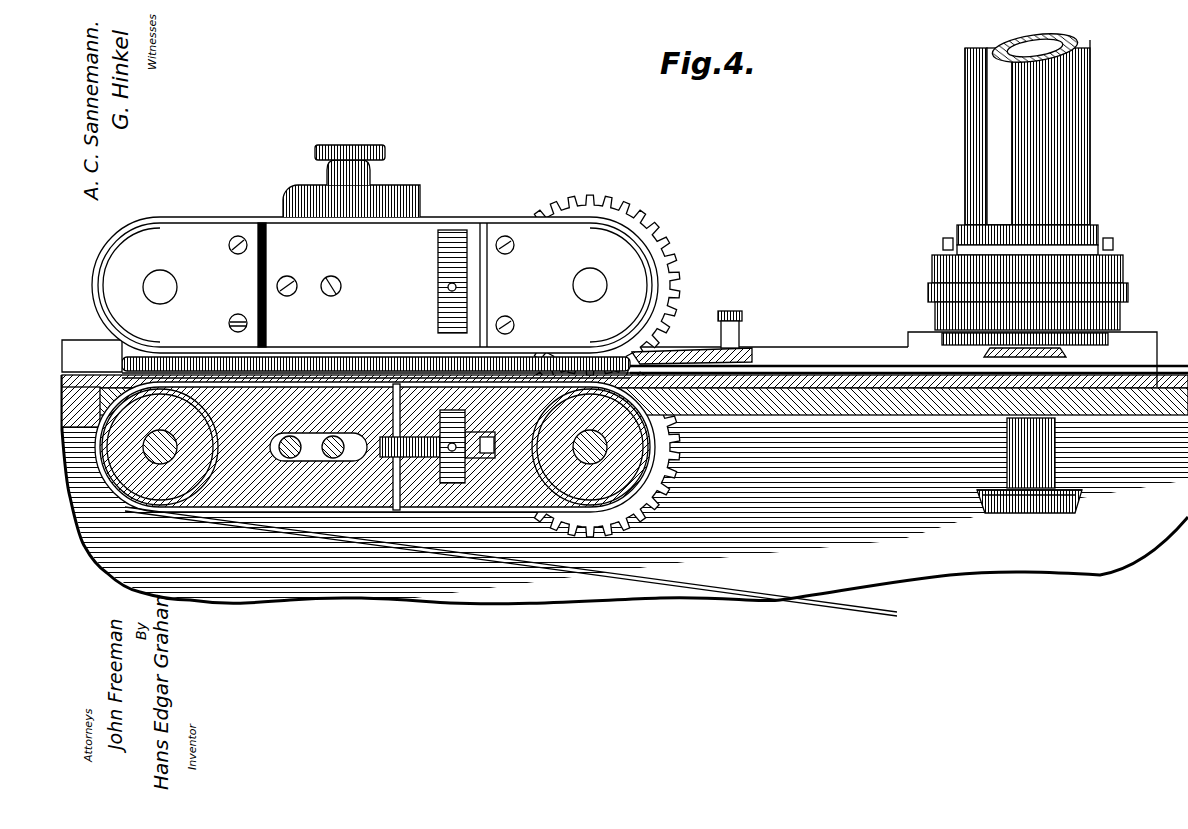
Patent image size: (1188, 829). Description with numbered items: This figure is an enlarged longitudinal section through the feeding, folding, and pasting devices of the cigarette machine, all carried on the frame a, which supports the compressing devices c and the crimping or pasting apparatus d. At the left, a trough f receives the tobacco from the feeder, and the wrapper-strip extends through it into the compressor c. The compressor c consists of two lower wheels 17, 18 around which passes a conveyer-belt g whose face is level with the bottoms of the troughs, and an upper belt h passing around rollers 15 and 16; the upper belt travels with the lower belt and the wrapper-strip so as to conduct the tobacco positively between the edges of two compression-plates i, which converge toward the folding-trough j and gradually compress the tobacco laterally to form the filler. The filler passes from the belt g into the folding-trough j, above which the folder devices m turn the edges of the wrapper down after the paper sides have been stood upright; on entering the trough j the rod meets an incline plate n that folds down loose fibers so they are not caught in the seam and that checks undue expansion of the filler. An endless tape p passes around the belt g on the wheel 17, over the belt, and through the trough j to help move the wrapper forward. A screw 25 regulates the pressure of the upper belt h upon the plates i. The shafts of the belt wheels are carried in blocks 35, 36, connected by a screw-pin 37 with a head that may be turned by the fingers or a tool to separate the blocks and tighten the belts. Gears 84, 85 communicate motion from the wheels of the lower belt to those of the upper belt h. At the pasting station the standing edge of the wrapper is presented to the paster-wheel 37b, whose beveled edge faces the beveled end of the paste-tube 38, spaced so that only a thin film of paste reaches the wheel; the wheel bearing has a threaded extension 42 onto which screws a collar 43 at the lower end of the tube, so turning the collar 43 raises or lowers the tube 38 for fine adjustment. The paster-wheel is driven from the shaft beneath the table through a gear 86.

The roller 15 is at (96, 290).
The roller 16 is at (665, 279).
The lower wheel 17 is at (152, 500).
The lower wheel 18 is at (625, 490).
The screw 25 is at (364, 150).
The block 35 is at (255, 608).
The block 36 is at (487, 633).
The screw-pin 37 is at (380, 460).
The paster-wheel 37b is at (1068, 353).
The paste-tube 38 is at (1085, 162).
The threaded extension 42 is at (1125, 290).
The collar 43 is at (934, 273).
The gear 84 is at (668, 496).
The gear 85 is at (590, 285).
The gear 86 is at (1030, 477).
The frame a is at (625, 489).
The compressing devices c is at (371, 259).
The crimping or pasting apparatus d is at (942, 184).
The trough f is at (92, 356).
The conveyer-belt g is at (492, 512).
The upper belt h is at (247, 222).
The compression-plate i is at (333, 357).
The folding-trough j is at (800, 378).
The folder devices m is at (910, 340).
The incline plate n is at (676, 352).
The endless tape p is at (583, 580).